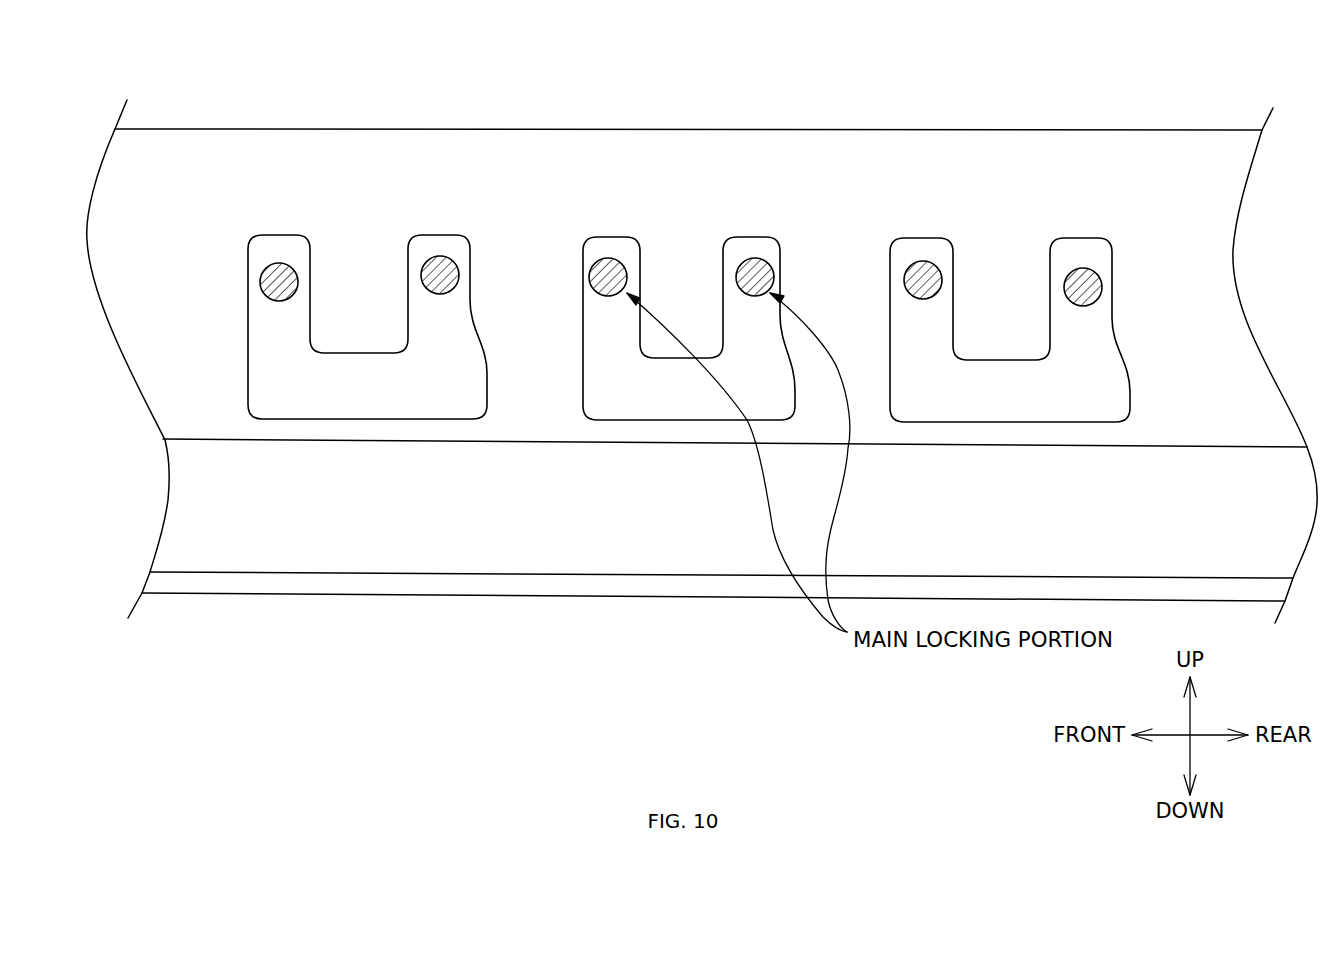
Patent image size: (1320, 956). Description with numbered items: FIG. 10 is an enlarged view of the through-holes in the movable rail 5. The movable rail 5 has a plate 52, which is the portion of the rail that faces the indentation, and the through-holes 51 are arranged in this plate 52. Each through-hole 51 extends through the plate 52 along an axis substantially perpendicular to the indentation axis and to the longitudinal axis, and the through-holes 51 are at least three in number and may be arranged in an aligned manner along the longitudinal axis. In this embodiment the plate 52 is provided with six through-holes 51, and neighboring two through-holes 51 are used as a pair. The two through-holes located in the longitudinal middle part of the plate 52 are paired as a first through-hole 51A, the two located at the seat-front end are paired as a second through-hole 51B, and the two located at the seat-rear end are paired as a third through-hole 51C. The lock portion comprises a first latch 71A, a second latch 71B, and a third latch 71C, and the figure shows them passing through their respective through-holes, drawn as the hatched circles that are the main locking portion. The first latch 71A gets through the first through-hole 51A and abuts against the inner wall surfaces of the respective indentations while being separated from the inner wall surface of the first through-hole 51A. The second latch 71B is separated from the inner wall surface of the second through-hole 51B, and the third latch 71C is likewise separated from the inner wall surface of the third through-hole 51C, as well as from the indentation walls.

The movable rail 5 is at (945, 132).
The plate 52 is at (525, 167).
The through-holes 51 is at (267, 253).
The first through-hole 51A is at (568, 228).
The second through-hole 51B is at (233, 225).
The third through-hole 51C is at (1127, 230).
The first latch 71A is at (772, 270).
The second latch 71B is at (280, 302).
The third latch 71C is at (923, 299).